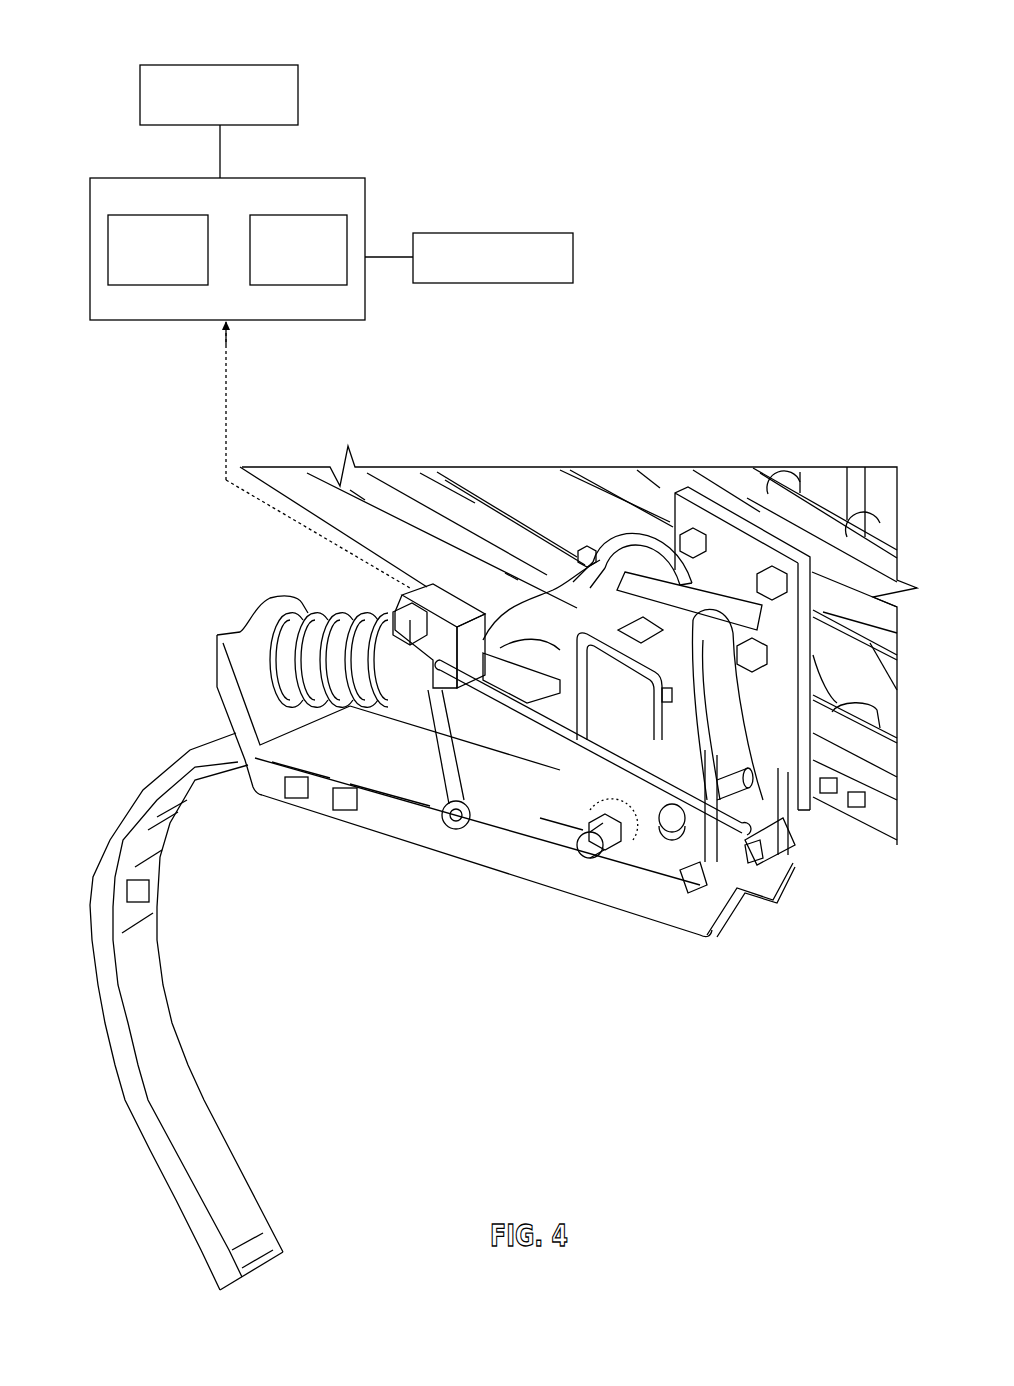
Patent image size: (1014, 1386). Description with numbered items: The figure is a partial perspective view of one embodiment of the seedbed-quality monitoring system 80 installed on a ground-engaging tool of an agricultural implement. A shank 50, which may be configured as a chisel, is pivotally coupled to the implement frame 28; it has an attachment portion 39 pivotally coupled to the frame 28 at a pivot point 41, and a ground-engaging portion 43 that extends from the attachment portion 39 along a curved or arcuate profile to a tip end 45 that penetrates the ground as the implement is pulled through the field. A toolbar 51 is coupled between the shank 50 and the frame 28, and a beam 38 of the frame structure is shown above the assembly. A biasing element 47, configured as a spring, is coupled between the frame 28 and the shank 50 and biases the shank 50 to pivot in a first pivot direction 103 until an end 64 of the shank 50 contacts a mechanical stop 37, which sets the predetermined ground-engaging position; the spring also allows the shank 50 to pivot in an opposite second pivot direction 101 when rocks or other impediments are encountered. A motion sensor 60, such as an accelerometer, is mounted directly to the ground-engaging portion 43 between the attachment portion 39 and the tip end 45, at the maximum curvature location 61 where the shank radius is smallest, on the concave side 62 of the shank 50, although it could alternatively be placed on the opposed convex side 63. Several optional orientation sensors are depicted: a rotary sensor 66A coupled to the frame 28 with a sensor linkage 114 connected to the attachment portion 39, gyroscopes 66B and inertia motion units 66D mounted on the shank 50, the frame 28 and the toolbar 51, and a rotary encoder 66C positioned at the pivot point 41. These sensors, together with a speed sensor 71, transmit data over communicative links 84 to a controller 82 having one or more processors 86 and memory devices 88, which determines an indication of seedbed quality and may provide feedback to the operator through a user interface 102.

The user interface 102 is at (205, 64).
The system 80 is at (130, 150).
The communicative link 84 is at (220, 143).
The controller 82 is at (365, 212).
The processor 86 is at (170, 263).
The memory device 88 is at (311, 263).
The speed sensor 71 is at (493, 284).
The implement frame 28 is at (627, 442).
The beam 38 is at (458, 508).
The rotary sensor 66A is at (447, 608).
The toolbar 51 is at (715, 590).
The biasing element 47 is at (330, 605).
The shank 50 is at (120, 634).
The gyroscope 66B is at (622, 636).
The inertia motion unit 66D is at (664, 703).
The mechanical stop 37 is at (790, 840).
The second pivot direction 101 is at (60, 912).
The sensor linkage 114 is at (433, 753).
The motion sensor 60 is at (149, 892).
The maximum curvature location 61 is at (70, 967).
The attachment portion 39 is at (517, 863).
The pivot point 41 is at (583, 856).
The rotary encoder 66C is at (630, 858).
The end of the shank 64 is at (752, 938).
The ground-engaging portion 43 is at (157, 1023).
The first pivot direction 103 is at (65, 995).
The concave side 62 is at (208, 1140).
The convex side 63 is at (113, 1145).
The tip end 45 is at (285, 1280).